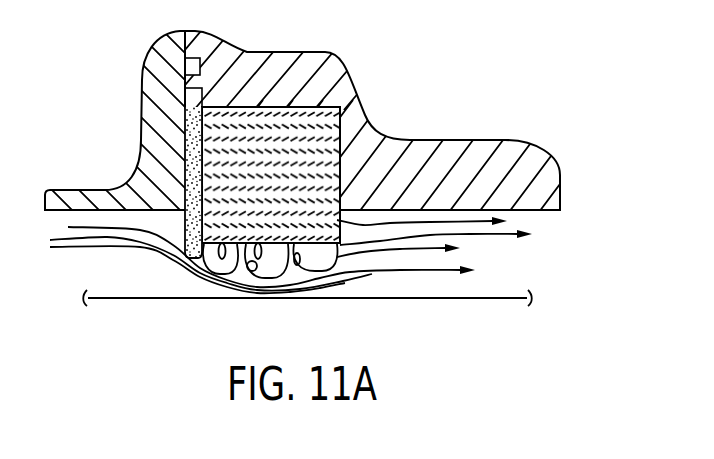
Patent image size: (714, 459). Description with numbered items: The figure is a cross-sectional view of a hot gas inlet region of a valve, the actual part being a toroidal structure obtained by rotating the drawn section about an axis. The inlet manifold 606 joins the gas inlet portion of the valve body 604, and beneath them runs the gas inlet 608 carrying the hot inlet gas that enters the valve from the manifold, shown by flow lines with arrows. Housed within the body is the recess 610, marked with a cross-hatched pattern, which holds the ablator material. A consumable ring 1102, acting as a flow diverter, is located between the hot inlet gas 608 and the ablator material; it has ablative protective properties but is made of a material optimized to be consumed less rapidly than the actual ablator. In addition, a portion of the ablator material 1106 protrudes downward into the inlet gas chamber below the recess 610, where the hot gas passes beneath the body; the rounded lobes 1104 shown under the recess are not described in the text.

The valve body 604 is at (466, 148).
The inlet manifold 606 is at (70, 196).
The gas inlet 608 is at (63, 248).
The recess 610 is at (308, 120).
The consumable ring 1102 is at (197, 260).
The droplets 1104 is at (352, 240).
The protruding portion of ablator material 1106 is at (434, 268).